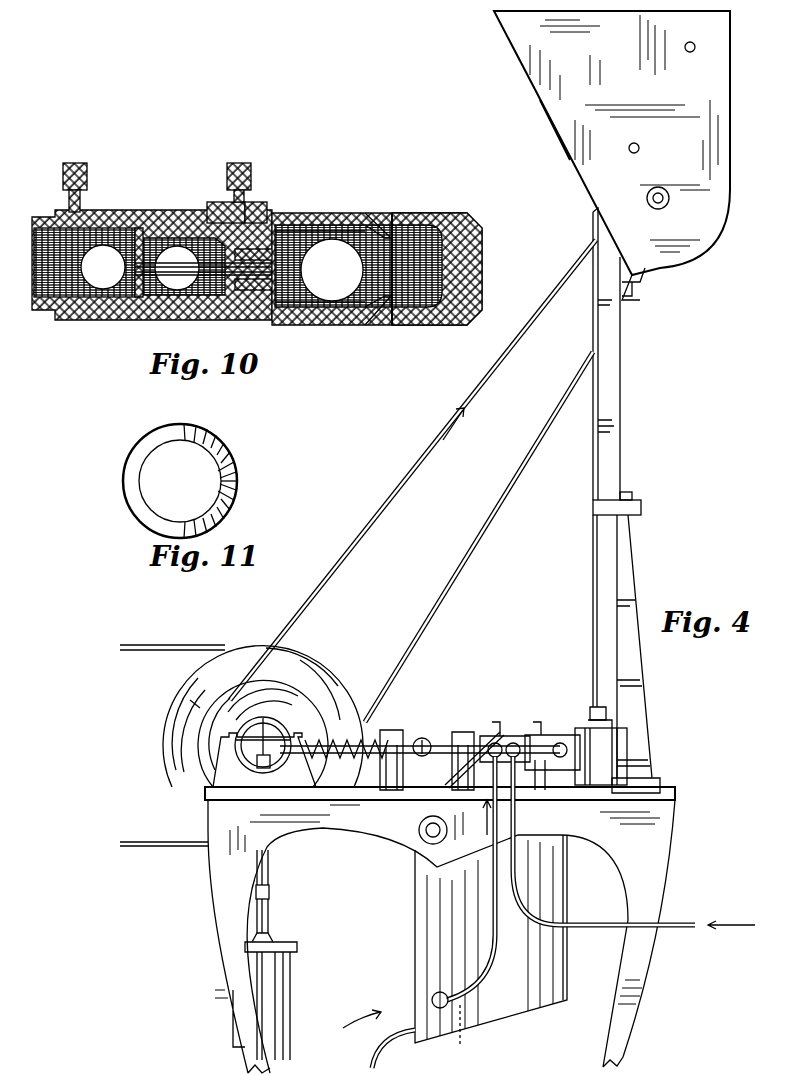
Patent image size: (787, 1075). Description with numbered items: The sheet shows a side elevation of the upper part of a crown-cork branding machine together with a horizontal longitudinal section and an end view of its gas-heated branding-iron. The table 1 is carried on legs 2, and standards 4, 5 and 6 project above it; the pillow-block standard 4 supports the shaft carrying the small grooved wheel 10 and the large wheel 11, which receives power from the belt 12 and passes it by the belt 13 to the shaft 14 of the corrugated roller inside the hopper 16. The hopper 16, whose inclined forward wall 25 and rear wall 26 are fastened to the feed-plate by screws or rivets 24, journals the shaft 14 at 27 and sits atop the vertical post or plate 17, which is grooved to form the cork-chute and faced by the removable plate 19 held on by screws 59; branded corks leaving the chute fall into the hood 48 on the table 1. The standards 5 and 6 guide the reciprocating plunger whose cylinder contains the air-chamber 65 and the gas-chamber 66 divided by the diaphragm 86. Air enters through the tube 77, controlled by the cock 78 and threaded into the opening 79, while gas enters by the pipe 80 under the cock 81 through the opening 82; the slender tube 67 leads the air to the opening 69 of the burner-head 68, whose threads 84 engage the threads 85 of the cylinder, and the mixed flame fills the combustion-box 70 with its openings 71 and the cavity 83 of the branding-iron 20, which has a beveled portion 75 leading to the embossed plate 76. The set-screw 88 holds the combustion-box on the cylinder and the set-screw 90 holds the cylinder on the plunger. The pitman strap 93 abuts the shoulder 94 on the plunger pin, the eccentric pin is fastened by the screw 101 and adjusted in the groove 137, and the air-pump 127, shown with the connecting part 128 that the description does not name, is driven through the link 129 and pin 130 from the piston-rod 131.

In FIG. 4, the table 1 is at (676, 796).
In FIG. 4, the legs 2 is at (441, 936).
In FIG. 4, the standard 4 is at (258, 750).
In FIG. 4, the standard 5 is at (392, 730).
In FIG. 4, the standard 6 is at (462, 732).
In FIG. 4, the small grooved wheel 10 is at (263, 733).
In FIG. 4, the large wheel 11 is at (263, 716).
In FIG. 4, the belt 12 is at (118, 648).
In FIG. 4, the belt 13 is at (332, 572).
In FIG. 4, the shaft 14 is at (668, 203).
In FIG. 4, the hopper 16 is at (612, 143).
In FIG. 4, the vertical post or plate 17 is at (612, 393).
In FIG. 4, the removable plate 19 is at (591, 557).
In FIG. 10, the branding-iron 20 is at (470, 296).
In FIG. 11, the branding-iron 20 is at (238, 494).
In FIG. 4, the screws or rivets 24 is at (696, 46).
In FIG. 4, the forward wall 25 is at (568, 153).
In FIG. 4, the rear wall 26 is at (733, 104).
In FIG. 4, the journal 27 is at (646, 198).
In FIG. 4, the hood 48 is at (632, 750).
In FIG. 4, the screws 59 is at (634, 498).
In FIG. 10, the air-chamber 65 is at (50, 248).
In FIG. 10, the gas-chamber 66 is at (190, 321).
In FIG. 10, the tube 67 is at (177, 268).
In FIG. 10, the burner-head 68 is at (306, 228).
In FIG. 10, the opening 69 is at (340, 228).
In FIG. 10, the combustion-box 70 is at (376, 214).
In FIG. 10, the openings 71 is at (332, 270).
In FIG. 4, the openings 71 is at (562, 742).
In FIG. 11, the beveled portion 75 is at (137, 458).
In FIG. 11, the embossed plate or portion 76 is at (212, 468).
In FIG. 4, the tube 77 is at (419, 912).
In FIG. 4, the cock 78 is at (500, 736).
In FIG. 10, the opening 79 is at (103, 267).
In FIG. 4, the pipe 80 is at (595, 921).
In FIG. 4, the cock 81 is at (538, 735).
In FIG. 10, the opening 82 is at (170, 240).
In FIG. 10, the cavity 83 is at (427, 214).
In FIG. 10, the screw-threads 84 is at (276, 246).
In FIG. 10, the screw-threads 85 is at (295, 218).
In FIG. 10, the interior wall or diaphragm 86 is at (135, 321).
In FIG. 10, the set-screw 88 is at (253, 182).
In FIG. 10, the set-screw 90 is at (82, 186).
In FIG. 4, the ring or strap 93 is at (424, 757).
In FIG. 4, the shoulder 94 is at (426, 738).
In FIG. 4, the screw 101 is at (215, 770).
In FIG. 4, the air-pump 127 is at (290, 992).
In FIG. 4, the arm 128 is at (230, 742).
In FIG. 4, the link 129 is at (270, 868).
In FIG. 4, the pin 130 is at (270, 892).
In FIG. 4, the piston-rod 131 is at (270, 920).
In FIG. 4, the groove 137 is at (195, 702).